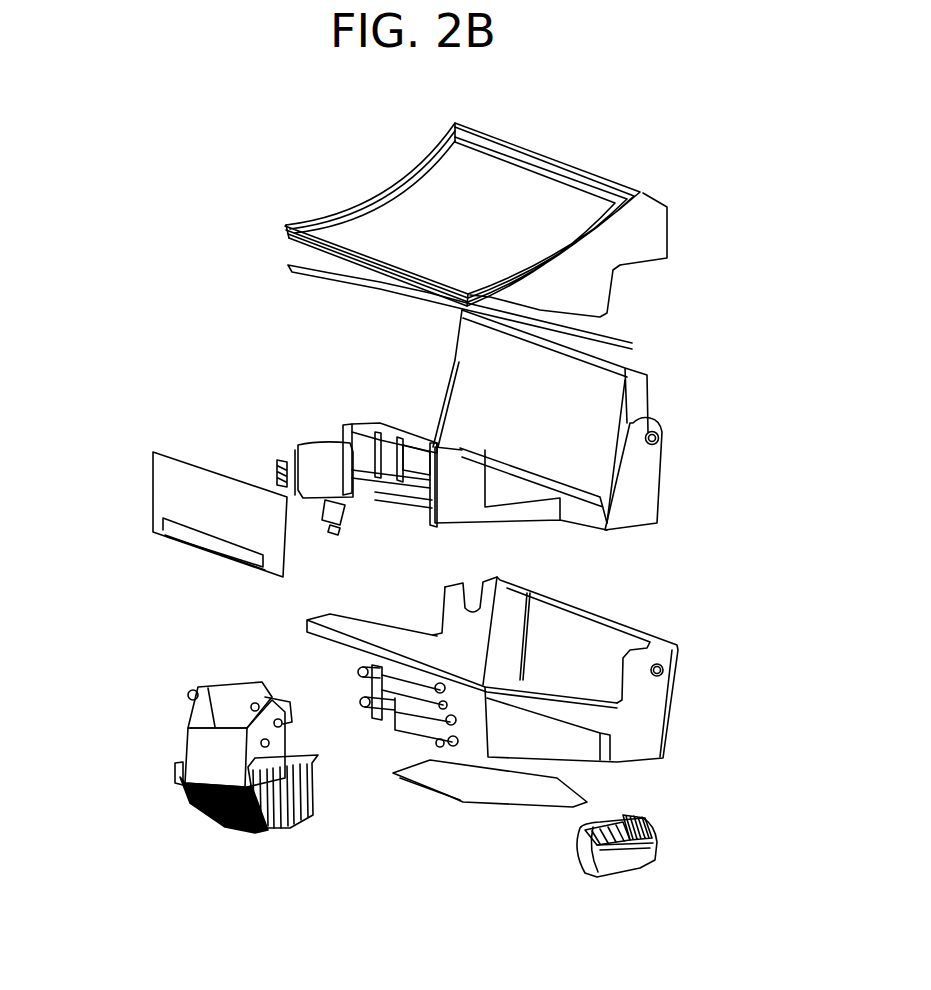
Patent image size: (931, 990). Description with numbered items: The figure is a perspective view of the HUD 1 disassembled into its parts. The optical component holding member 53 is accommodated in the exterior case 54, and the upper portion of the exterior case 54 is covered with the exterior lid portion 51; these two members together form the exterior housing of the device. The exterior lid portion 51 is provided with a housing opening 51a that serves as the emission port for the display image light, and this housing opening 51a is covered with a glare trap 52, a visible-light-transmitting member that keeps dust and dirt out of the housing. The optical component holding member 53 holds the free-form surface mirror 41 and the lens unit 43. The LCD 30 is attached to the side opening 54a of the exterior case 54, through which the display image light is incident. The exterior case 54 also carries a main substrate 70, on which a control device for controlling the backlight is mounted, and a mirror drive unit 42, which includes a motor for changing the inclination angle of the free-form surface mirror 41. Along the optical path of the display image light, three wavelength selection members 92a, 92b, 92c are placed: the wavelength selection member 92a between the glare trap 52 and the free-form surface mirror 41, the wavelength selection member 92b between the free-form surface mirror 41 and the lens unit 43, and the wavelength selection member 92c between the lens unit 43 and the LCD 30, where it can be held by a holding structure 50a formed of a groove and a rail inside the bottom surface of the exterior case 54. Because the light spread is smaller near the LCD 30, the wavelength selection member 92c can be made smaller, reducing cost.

The HUD 1 is at (214, 302).
The LCD 30 is at (213, 693).
The free-form surface mirror 41 is at (615, 395).
The mirror drive unit 42 is at (657, 847).
The lens unit 43 is at (313, 453).
The holding structure 50a is at (203, 555).
The exterior lid portion 51 is at (660, 237).
The housing opening 51a is at (443, 170).
The glare trap 52 is at (391, 207).
The optical component holding member 53 is at (650, 503).
The exterior case 54 is at (653, 723).
The side opening 54a is at (372, 692).
The main substrate 70 is at (457, 802).
The wavelength selection member 92a is at (630, 345).
The wavelength selection member 92b is at (403, 430).
The wavelength selection member 92c is at (203, 468).